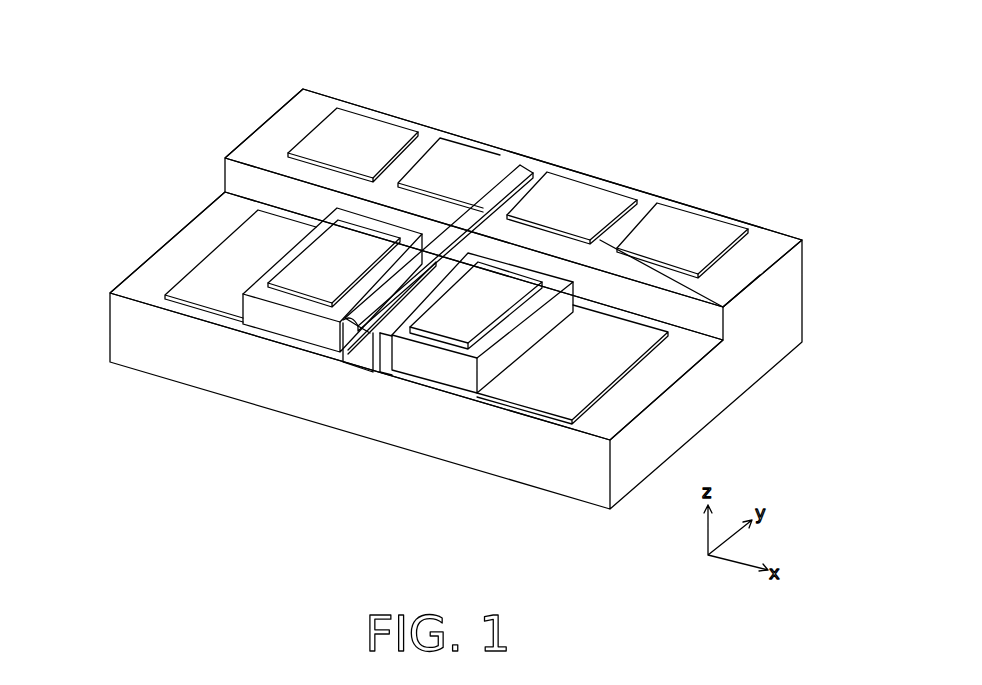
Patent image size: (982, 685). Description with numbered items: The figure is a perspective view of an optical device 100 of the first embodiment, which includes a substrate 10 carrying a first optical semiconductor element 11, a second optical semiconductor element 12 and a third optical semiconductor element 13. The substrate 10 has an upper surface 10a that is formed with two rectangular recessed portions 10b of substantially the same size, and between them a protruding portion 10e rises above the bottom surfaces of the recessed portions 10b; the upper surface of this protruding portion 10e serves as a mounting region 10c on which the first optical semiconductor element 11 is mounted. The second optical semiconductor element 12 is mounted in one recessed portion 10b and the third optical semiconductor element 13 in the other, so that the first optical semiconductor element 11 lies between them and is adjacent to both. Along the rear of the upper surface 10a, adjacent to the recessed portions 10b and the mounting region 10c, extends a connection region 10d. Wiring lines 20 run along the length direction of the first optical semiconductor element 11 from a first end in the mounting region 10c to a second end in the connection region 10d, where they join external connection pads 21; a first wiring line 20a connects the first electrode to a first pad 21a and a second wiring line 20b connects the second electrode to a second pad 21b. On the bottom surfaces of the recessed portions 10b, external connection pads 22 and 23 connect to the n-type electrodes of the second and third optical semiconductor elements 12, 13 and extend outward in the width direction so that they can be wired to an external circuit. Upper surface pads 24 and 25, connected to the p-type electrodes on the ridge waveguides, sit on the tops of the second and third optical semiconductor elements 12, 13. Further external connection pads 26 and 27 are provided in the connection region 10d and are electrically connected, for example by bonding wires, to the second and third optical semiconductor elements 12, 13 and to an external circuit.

The optical device 100 is at (437, 274).
The substrate 10 is at (437, 300).
The upper surface 10a is at (278, 133).
The recessed portion 10b is at (165, 270).
The mounting region 10c is at (372, 310).
The connection region 10d is at (640, 215).
The protruding portion 10e is at (362, 348).
The first optical semiconductor element 11 is at (388, 355).
The second optical semiconductor element 12 is at (283, 320).
The third optical semiconductor element 13 is at (433, 365).
The wiring lines 20 is at (439, 176).
The first wiring line 20a is at (486, 200).
The second wiring line 20b is at (480, 212).
The external connection pads 21 is at (525, 139).
The first pad 21a is at (578, 200).
The second pad 21b is at (510, 177).
The external connection pad 22 is at (215, 283).
The external connection pad 23 is at (547, 382).
The upper surface pad 24 is at (270, 287).
The upper surface pad 25 is at (463, 317).
The external connection pad 26 is at (355, 133).
The external connection pad 27 is at (702, 230).